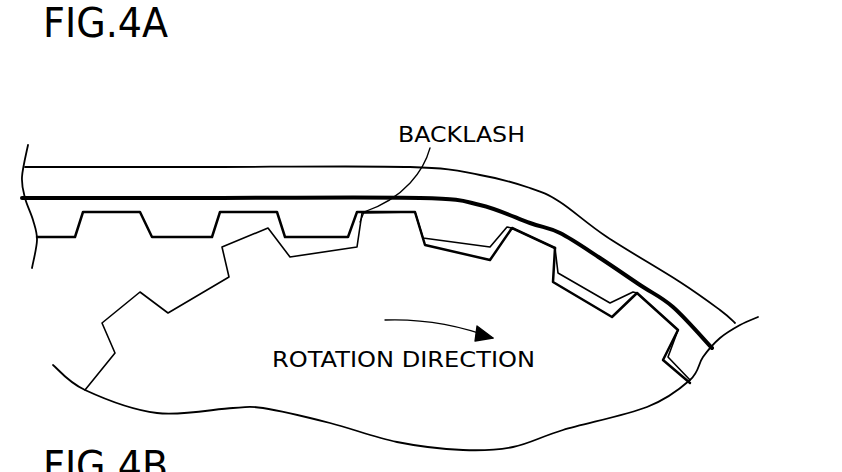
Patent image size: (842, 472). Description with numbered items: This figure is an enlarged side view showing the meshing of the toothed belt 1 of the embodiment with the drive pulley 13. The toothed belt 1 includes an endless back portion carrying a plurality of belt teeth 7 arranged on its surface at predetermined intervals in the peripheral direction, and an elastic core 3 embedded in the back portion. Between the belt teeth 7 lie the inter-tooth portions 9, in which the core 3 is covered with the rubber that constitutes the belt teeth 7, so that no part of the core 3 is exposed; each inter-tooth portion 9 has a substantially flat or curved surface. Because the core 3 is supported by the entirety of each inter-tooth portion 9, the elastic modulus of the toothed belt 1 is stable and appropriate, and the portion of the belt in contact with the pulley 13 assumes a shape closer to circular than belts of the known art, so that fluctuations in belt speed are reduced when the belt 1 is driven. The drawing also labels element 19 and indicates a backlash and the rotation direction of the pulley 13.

The toothed belt 1 is at (145, 128).
The core 3 is at (320, 197).
The belt teeth 7 is at (590, 280).
The inter-tooth portions 9 is at (112, 218).
The drive pulley 13 is at (568, 418).
The pulley tooth 19 is at (647, 323).